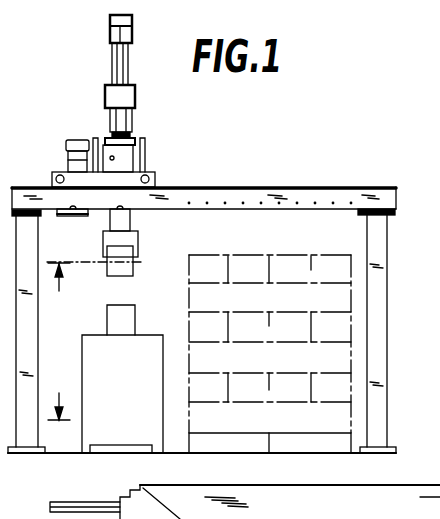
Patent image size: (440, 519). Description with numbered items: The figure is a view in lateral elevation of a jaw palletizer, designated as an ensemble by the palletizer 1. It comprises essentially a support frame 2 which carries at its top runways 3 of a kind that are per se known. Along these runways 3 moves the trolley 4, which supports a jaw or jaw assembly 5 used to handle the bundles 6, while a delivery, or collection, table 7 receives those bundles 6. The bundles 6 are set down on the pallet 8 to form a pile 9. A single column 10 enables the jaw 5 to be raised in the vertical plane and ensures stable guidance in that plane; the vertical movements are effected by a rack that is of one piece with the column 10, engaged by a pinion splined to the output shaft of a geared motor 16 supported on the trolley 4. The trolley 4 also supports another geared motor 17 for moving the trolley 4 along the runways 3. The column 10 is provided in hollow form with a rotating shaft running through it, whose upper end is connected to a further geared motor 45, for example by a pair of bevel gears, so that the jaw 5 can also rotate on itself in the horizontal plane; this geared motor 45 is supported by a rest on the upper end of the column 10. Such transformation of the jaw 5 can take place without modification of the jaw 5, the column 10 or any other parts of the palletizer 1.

The palletizer 1 is at (213, 174).
The support frame 2 is at (366, 405).
The runways 3 is at (320, 200).
The trolley 4 is at (167, 180).
The jaw 5 is at (144, 257).
The bundles 6 is at (135, 309).
The delivery table 7 is at (97, 335).
The pallet 8 is at (192, 446).
The pile 9 is at (219, 273).
The column 10 is at (113, 73).
The geared motor 16 is at (105, 98).
The geared motor 17 is at (67, 146).
The geared motor 45 is at (133, 26).